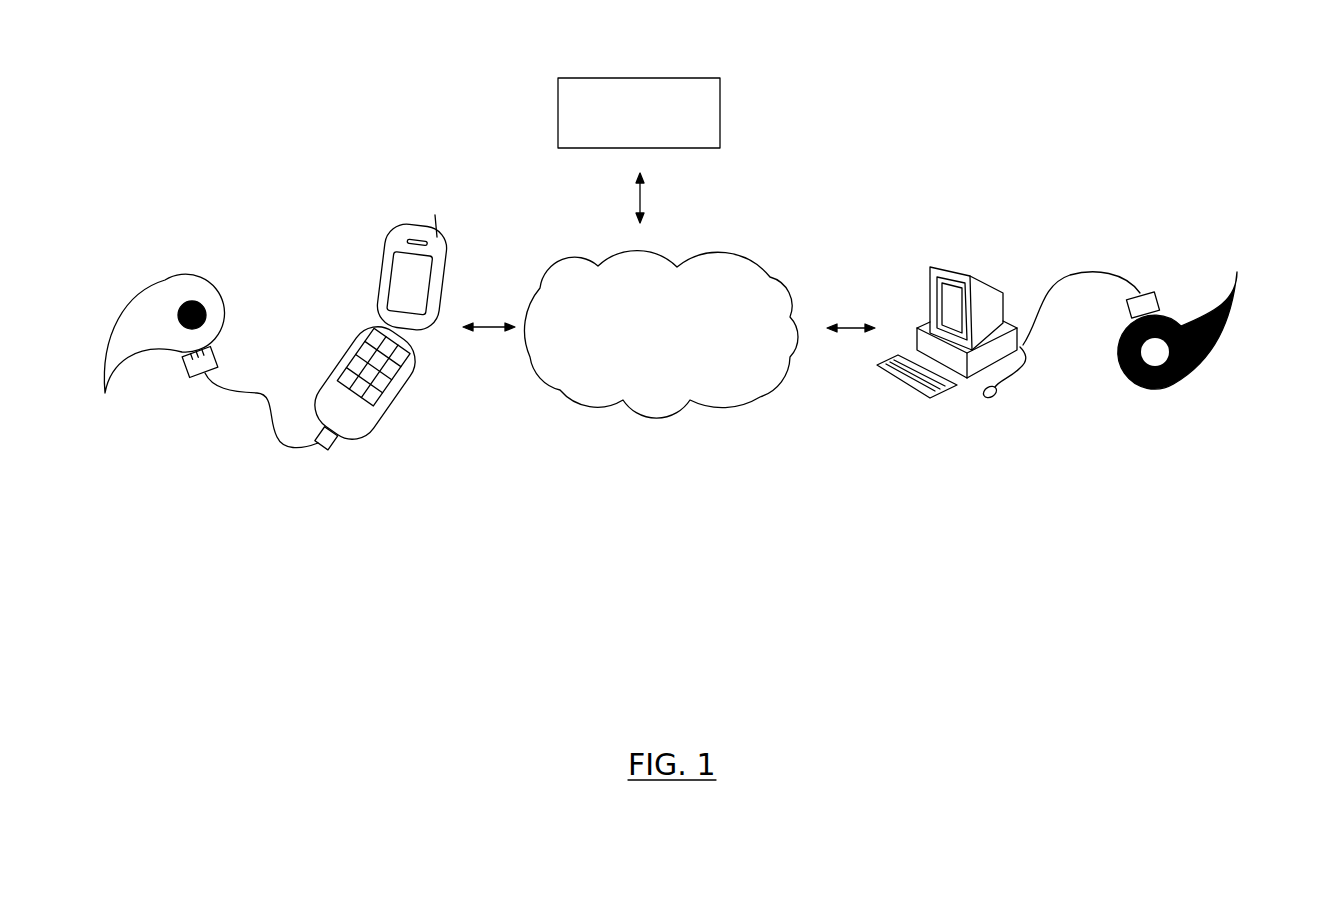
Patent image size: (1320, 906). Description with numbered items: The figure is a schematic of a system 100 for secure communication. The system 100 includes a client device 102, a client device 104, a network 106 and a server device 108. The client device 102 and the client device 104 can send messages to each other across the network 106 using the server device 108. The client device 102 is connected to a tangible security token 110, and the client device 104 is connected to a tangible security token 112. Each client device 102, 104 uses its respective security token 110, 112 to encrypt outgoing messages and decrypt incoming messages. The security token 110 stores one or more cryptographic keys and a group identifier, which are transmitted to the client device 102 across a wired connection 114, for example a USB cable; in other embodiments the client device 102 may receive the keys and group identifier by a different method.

The system 100 is at (1050, 74).
The client device 102 is at (406, 232).
The client device 104 is at (977, 270).
The network 106 is at (732, 250).
The server device 108 is at (673, 78).
The tangible security token 110 is at (178, 284).
The tangible security token 112 is at (1220, 363).
The wired connection 114 is at (257, 392).